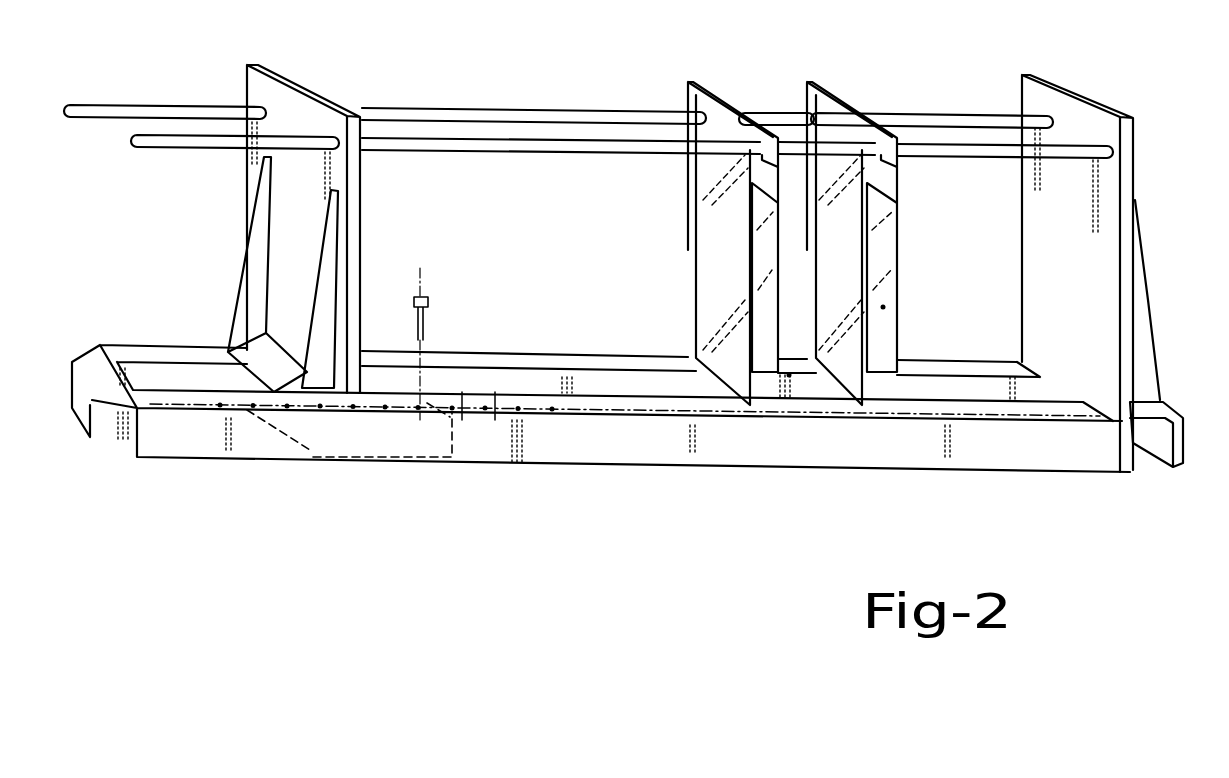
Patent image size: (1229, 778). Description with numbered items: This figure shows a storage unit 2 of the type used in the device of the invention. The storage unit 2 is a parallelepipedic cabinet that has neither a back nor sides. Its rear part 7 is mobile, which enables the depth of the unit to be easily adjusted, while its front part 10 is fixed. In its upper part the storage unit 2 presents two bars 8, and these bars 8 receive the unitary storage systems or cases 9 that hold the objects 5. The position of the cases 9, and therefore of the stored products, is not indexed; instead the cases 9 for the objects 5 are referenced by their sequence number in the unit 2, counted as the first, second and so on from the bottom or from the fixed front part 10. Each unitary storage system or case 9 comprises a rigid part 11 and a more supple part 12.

The storage unit 2 is at (893, 83).
The objects 5 is at (789, 375).
The rear part 7 is at (293, 107).
The bars 8 is at (543, 145).
The unitary storage systems or cases 9 is at (812, 97).
The front part 10 is at (1092, 100).
The rigid part 11 is at (713, 265).
The supple part 12 is at (930, 270).